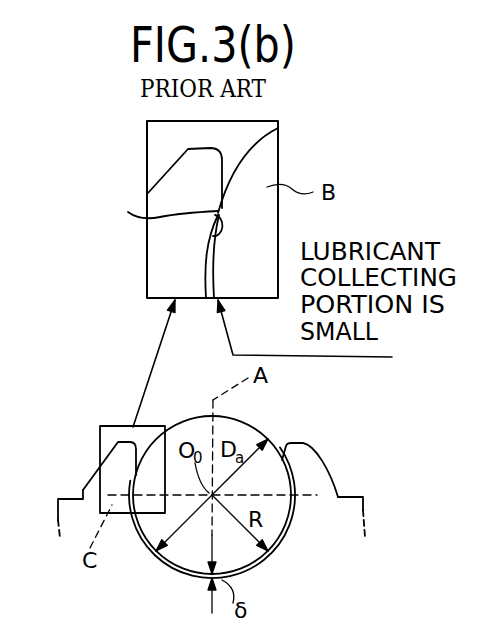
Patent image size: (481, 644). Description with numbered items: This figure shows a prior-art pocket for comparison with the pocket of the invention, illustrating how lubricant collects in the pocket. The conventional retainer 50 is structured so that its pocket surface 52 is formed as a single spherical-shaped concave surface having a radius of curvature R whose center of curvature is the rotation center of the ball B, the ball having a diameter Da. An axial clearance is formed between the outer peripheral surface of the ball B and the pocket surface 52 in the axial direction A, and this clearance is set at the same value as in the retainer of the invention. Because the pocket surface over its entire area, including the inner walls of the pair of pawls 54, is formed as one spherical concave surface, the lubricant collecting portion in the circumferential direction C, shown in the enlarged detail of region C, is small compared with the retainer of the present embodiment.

The conventional retainer 50 is at (80, 489).
The pocket surface 52 is at (160, 597).
The pawls 54 is at (178, 173).